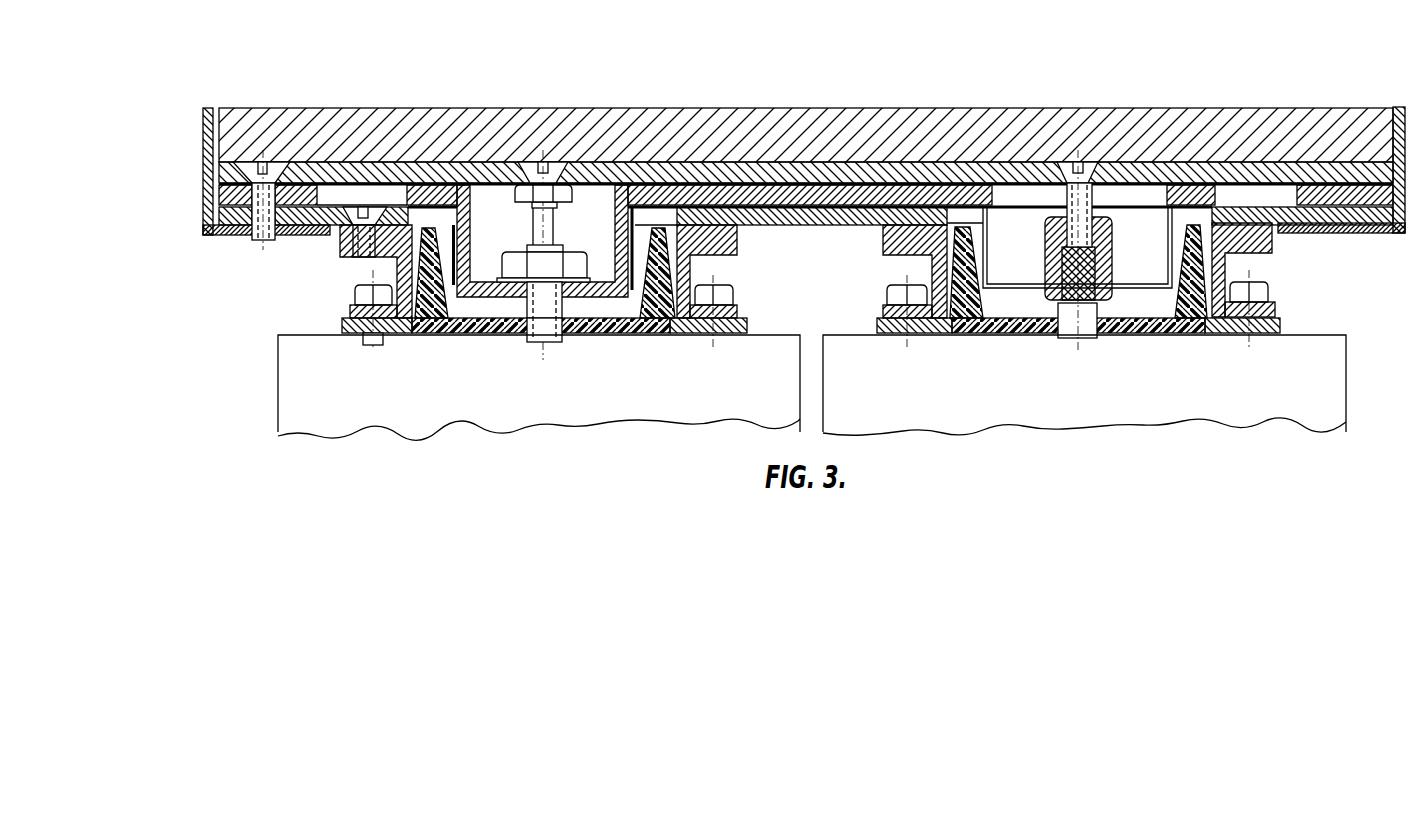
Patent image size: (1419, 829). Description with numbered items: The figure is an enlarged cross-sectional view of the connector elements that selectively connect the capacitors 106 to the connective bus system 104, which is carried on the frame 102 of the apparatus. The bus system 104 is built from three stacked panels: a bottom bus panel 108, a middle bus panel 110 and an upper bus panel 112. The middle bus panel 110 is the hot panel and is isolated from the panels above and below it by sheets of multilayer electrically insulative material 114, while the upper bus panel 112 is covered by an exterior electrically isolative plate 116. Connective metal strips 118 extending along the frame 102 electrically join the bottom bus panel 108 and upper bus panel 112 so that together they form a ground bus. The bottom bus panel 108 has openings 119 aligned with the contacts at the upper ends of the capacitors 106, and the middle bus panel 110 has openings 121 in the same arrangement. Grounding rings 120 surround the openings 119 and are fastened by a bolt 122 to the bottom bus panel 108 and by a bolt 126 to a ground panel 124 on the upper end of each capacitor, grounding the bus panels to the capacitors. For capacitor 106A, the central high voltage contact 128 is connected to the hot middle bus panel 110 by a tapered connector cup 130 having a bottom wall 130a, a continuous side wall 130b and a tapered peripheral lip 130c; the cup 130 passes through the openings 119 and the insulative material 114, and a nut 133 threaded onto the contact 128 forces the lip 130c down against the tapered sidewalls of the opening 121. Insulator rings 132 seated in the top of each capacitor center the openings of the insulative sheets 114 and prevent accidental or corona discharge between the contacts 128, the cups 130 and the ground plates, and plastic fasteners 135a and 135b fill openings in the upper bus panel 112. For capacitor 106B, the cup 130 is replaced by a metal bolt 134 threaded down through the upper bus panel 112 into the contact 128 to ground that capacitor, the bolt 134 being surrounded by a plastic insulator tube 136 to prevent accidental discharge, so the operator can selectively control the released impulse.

The frame 102 is at (205, 125).
The connective bus system 104 is at (793, 184).
The capacitors 106 is at (293, 392).
The capacitor 106A is at (539, 404).
The capacitor 106B is at (1084, 385).
The bottom bus panel 108 is at (240, 223).
The middle bus panel 110 is at (433, 206).
The upper bus panel 112 is at (227, 177).
The multilayer electrically insulative material 114 is at (347, 187).
The exterior electrically isolative plate 116 is at (247, 123).
The connective metal strips 118 is at (227, 197).
The openings 119 is at (600, 300).
The grounding rings 120 is at (355, 242).
The openings 121 is at (1167, 193).
The bolt 122 is at (370, 258).
The ground panel 124 is at (740, 335).
The bolt 126 is at (737, 297).
The central high voltage contact 128 is at (532, 345).
The tapered connector cup 130 is at (627, 182).
The bottom wall 130a is at (482, 333).
The continuous side wall 130b is at (631, 213).
The peripheral lip 130c is at (466, 190).
The insulator rings 132 is at (1168, 260).
The nut 133 is at (507, 262).
The metal bolt 134 is at (1060, 165).
The plastic fastener 135a is at (528, 167).
The plastic fastener 135b is at (563, 187).
The plastic insulator tube 136 is at (1008, 235).